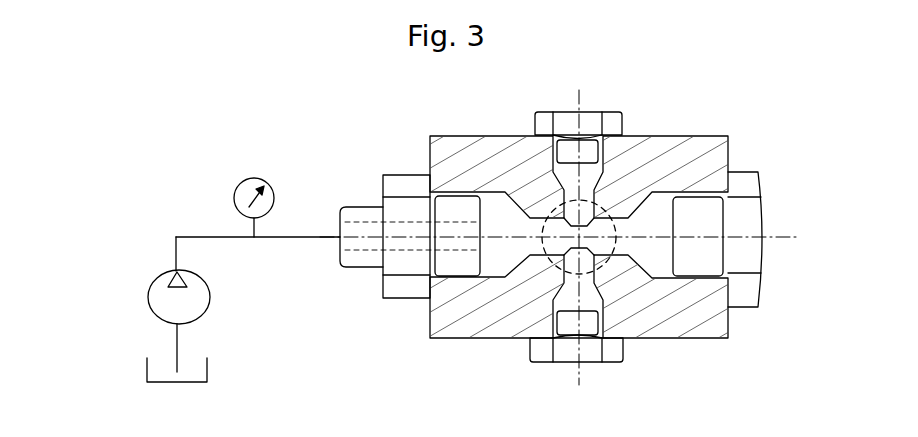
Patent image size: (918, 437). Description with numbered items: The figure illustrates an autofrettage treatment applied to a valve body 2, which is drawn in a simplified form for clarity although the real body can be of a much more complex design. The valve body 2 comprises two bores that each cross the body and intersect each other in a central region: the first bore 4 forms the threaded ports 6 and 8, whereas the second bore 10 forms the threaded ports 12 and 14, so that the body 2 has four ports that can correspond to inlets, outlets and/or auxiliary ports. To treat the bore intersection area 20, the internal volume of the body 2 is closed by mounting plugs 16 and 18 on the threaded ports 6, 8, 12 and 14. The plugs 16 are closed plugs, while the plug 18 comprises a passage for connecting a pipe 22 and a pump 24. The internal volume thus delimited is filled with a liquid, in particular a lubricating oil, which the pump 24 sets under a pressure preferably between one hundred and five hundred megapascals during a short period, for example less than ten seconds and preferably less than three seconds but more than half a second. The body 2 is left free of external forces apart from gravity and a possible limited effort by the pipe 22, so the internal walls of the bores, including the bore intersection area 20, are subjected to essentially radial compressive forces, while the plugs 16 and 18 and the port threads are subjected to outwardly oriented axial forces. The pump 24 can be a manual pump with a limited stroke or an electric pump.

The valve body 2 is at (350, 106).
The first bore 4 is at (588, 192).
The threaded port 6 is at (548, 318).
The threaded port 8 is at (551, 152).
The second bore 10 is at (630, 247).
The threaded port 12 is at (455, 192).
The threaded port 14 is at (677, 277).
The plug 16 is at (587, 122).
The plug 18 is at (407, 288).
The bore intersection area 20 is at (542, 255).
The pipe 22 is at (205, 237).
The pump 24 is at (143, 287).